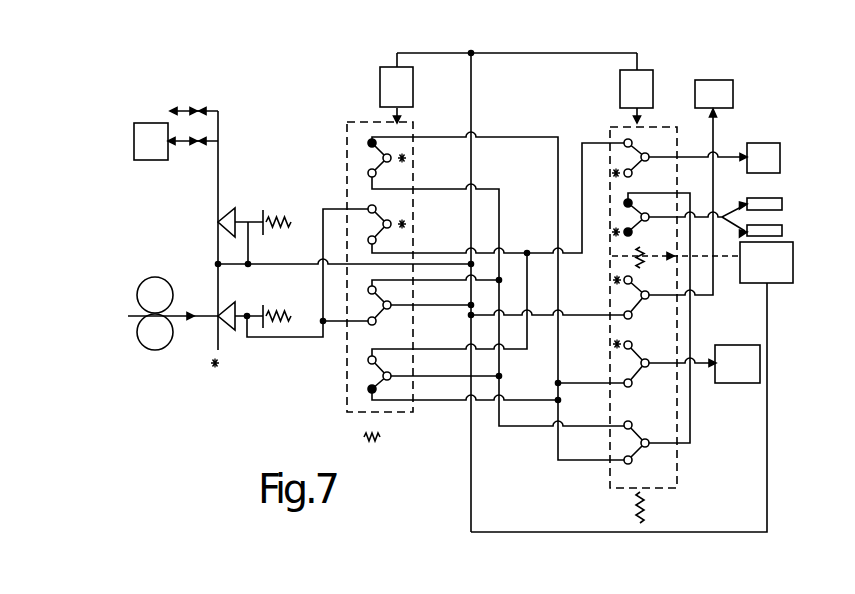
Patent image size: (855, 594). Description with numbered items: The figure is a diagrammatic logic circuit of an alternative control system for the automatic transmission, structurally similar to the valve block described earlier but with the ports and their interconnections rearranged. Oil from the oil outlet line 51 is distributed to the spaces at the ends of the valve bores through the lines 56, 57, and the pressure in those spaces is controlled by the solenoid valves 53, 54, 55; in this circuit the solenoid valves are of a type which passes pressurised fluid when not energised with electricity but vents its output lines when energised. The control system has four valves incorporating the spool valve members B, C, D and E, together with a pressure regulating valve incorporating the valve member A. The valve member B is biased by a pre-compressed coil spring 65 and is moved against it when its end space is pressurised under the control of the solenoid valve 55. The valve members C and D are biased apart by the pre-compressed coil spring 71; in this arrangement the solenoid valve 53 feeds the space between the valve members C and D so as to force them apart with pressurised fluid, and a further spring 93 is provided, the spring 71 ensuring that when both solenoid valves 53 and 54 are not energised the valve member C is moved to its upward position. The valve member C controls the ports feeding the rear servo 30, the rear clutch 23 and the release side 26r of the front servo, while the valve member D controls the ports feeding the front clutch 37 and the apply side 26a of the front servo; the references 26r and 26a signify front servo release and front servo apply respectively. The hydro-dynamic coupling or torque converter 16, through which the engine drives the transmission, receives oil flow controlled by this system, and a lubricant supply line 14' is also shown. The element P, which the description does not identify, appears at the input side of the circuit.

The lubricant supply line 14' is at (203, 94).
The torque converter 16 is at (145, 155).
The spool valve member E is at (258, 200).
The pressure regulating valve member A is at (266, 350).
The feed rollers P is at (160, 342).
The oil outlet line 51 is at (280, 264).
The spool valve member B is at (332, 384).
The solenoid valve 55 is at (380, 83).
The line 57 is at (471, 91).
The solenoid valve 54 is at (653, 85).
The front clutch 37 is at (707, 106).
The spool valve member C is at (712, 181).
The rear servo 30 is at (756, 170).
The rear clutch 23 is at (762, 193).
The release side of front servo 26r is at (786, 224).
The solenoid valve 53 is at (757, 277).
The coil spring 71 is at (618, 255).
The apply side of front servo 26a is at (737, 364).
The spool valve member D is at (703, 413).
The coil spring 65 is at (382, 437).
The line 56 is at (471, 488).
The further spring 93 is at (650, 508).